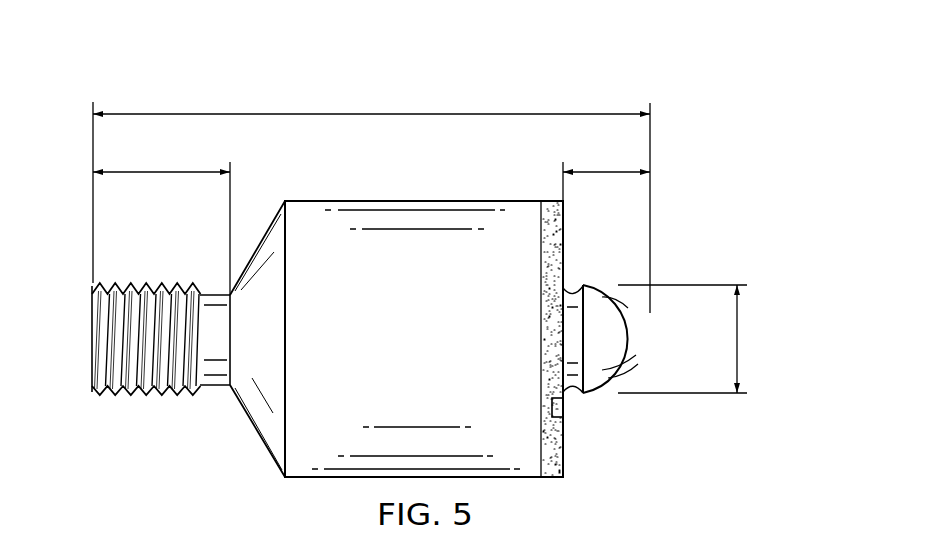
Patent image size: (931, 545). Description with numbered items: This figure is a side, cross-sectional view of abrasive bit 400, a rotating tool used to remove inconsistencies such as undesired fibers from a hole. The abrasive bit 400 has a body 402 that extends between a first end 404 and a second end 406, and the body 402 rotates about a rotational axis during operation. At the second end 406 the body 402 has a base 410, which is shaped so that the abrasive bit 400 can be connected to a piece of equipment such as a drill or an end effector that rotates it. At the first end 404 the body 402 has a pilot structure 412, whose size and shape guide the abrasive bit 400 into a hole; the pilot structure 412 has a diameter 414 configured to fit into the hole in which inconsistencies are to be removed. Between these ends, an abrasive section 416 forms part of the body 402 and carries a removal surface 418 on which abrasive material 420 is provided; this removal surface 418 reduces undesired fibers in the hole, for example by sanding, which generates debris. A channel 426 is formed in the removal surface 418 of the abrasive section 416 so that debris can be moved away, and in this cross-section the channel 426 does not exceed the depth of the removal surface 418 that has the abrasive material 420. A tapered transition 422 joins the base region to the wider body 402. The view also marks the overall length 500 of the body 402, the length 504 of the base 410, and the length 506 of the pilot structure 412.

The abrasive bit 400 is at (608, 68).
The body 402 is at (410, 200).
The first end 404 is at (650, 350).
The second end 406 is at (92, 340).
The base 410 is at (133, 396).
The pilot structure 412 is at (650, 326).
The diameter 414 is at (746, 338).
The abrasive section 416 is at (553, 478).
The removal surface 418 is at (545, 427).
The abrasive material 420 is at (563, 448).
The tapered transition 422 is at (302, 207).
The channel 426 is at (563, 410).
The length 500 is at (370, 113).
The length 504 is at (160, 172).
The length 506 is at (607, 172).